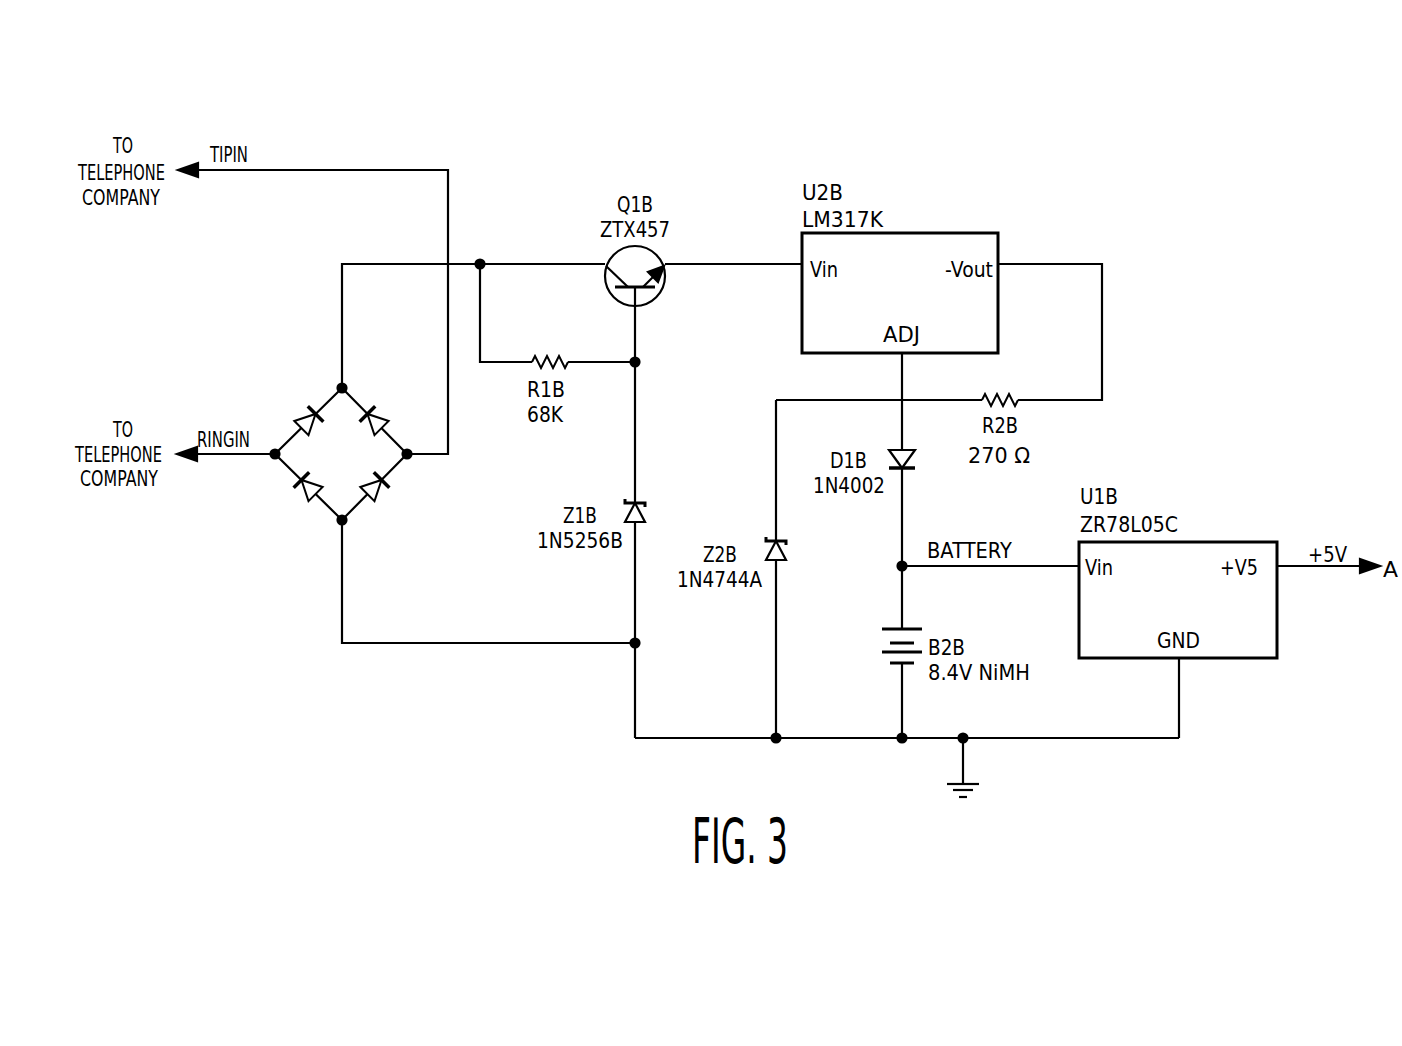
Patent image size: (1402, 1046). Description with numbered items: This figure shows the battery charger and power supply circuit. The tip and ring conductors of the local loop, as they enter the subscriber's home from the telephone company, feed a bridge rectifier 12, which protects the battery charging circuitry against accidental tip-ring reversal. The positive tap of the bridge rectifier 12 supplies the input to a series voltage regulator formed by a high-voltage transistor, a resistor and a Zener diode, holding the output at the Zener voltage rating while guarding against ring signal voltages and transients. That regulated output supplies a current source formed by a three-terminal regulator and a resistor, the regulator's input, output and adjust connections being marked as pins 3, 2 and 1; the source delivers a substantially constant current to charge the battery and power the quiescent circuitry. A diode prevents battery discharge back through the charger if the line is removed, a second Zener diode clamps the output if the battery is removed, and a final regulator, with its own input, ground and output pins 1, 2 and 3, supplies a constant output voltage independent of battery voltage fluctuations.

The bridge rectifier 12 is at (327, 455).
The pin 1 is at (982, 459).
The pin 2 is at (1088, 490).
The pin 3 is at (1022, 407).